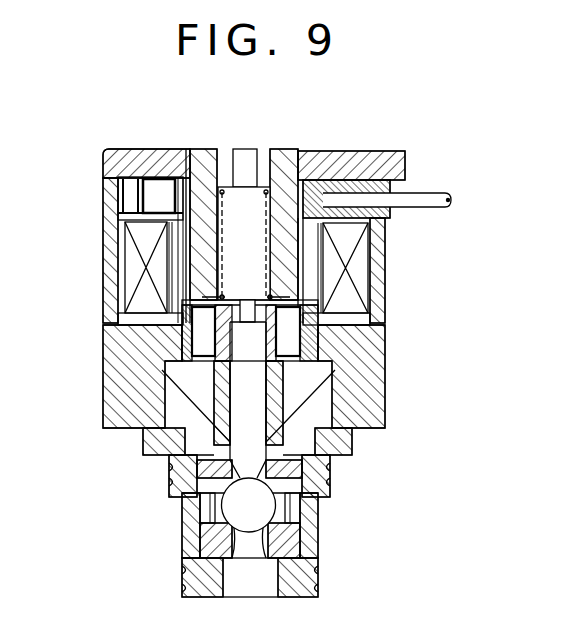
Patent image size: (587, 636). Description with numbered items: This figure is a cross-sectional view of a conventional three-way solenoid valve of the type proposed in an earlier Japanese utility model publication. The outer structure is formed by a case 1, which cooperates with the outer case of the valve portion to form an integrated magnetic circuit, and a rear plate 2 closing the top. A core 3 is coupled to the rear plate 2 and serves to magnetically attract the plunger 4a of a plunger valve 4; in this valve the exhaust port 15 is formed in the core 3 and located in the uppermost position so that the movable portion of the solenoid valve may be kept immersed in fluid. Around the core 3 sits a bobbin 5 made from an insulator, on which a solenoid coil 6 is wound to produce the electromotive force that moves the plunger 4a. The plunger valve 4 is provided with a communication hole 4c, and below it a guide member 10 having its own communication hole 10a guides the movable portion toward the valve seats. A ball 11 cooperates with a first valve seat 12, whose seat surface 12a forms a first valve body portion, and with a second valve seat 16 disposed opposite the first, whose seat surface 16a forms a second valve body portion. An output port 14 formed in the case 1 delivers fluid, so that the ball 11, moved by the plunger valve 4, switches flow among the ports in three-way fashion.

The case 1 is at (107, 195).
The rear plate 2 is at (157, 149).
The core 3 is at (284, 149).
The plunger valve 4 is at (466, 340).
The plunger 4a is at (165, 338).
The communication hole 4c is at (135, 313).
The bobbin 5 is at (113, 220).
The solenoid coil 6 is at (128, 272).
The guide member 10 is at (230, 447).
The communication hole 10a is at (200, 402).
The ball 11 is at (250, 522).
The first valve seat 12 is at (318, 568).
The seat surface 12a is at (303, 508).
The output port 14 is at (190, 505).
The exhaust port 15 is at (245, 149).
The second valve seat 16 is at (325, 470).
The seat surface 16a is at (325, 497).